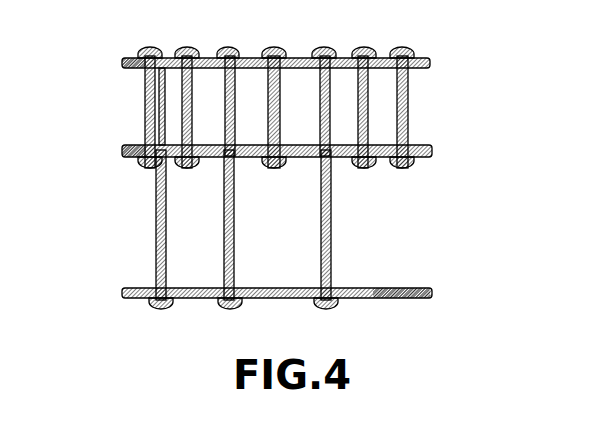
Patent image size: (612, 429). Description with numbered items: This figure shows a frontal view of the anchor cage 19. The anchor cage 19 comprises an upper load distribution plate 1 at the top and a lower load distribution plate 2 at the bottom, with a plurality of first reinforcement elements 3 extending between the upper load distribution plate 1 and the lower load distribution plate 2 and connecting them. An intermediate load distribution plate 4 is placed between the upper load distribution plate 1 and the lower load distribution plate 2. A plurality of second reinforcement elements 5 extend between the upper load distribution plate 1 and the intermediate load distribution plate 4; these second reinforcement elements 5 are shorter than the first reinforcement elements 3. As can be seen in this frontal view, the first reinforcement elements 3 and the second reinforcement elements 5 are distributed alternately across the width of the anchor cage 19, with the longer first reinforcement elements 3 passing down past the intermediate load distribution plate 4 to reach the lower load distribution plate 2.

The upper load distribution plate 1 is at (432, 62).
The lower load distribution plate 2 is at (433, 293).
The first reinforcement elements 3 is at (222, 193).
The intermediate load distribution plate 4 is at (433, 148).
The second reinforcement elements 5 is at (273, 127).
The anchor cage 19 is at (428, 215).